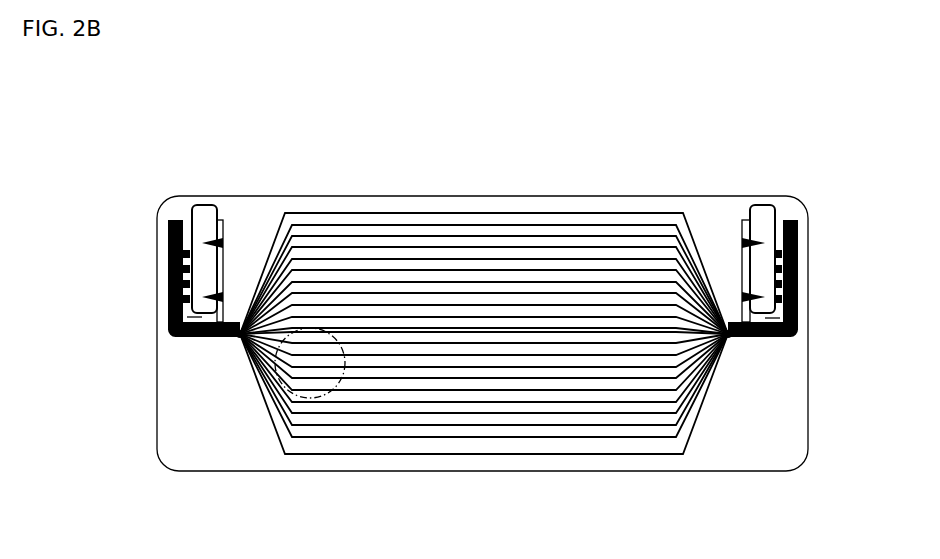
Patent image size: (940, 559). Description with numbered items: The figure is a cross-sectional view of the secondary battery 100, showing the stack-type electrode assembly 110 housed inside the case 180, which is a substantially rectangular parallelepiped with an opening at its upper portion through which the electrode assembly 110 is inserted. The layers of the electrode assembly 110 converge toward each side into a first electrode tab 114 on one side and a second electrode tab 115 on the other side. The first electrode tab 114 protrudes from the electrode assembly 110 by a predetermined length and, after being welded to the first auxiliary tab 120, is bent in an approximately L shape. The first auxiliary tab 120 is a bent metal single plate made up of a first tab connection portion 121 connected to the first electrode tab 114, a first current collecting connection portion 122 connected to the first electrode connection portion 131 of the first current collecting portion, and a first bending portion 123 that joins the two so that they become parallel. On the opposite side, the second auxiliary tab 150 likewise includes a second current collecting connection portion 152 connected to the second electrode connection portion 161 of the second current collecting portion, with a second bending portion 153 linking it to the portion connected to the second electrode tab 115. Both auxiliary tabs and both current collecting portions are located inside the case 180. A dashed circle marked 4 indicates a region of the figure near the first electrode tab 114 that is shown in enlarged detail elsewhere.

The secondary battery 100 is at (838, 150).
The electrode assembly 110 is at (477, 213).
The first electrode tab 114 is at (168, 333).
The second electrode tab 115 is at (798, 332).
The first auxiliary tab 120 is at (80, 222).
The first tab connection portion 121 is at (190, 272).
The first current collecting connection portion 122 is at (218, 264).
The first bending portion 123 is at (168, 318).
The first electrode connection portion 131 is at (203, 212).
The second auxiliary tab 150 is at (885, 223).
The second current collecting connection portion 152 is at (747, 268).
The second bending portion 153 is at (798, 270).
The second electrode connection portion 161 is at (762, 212).
The case 180 is at (343, 196).
The detail region 4 is at (309, 398).